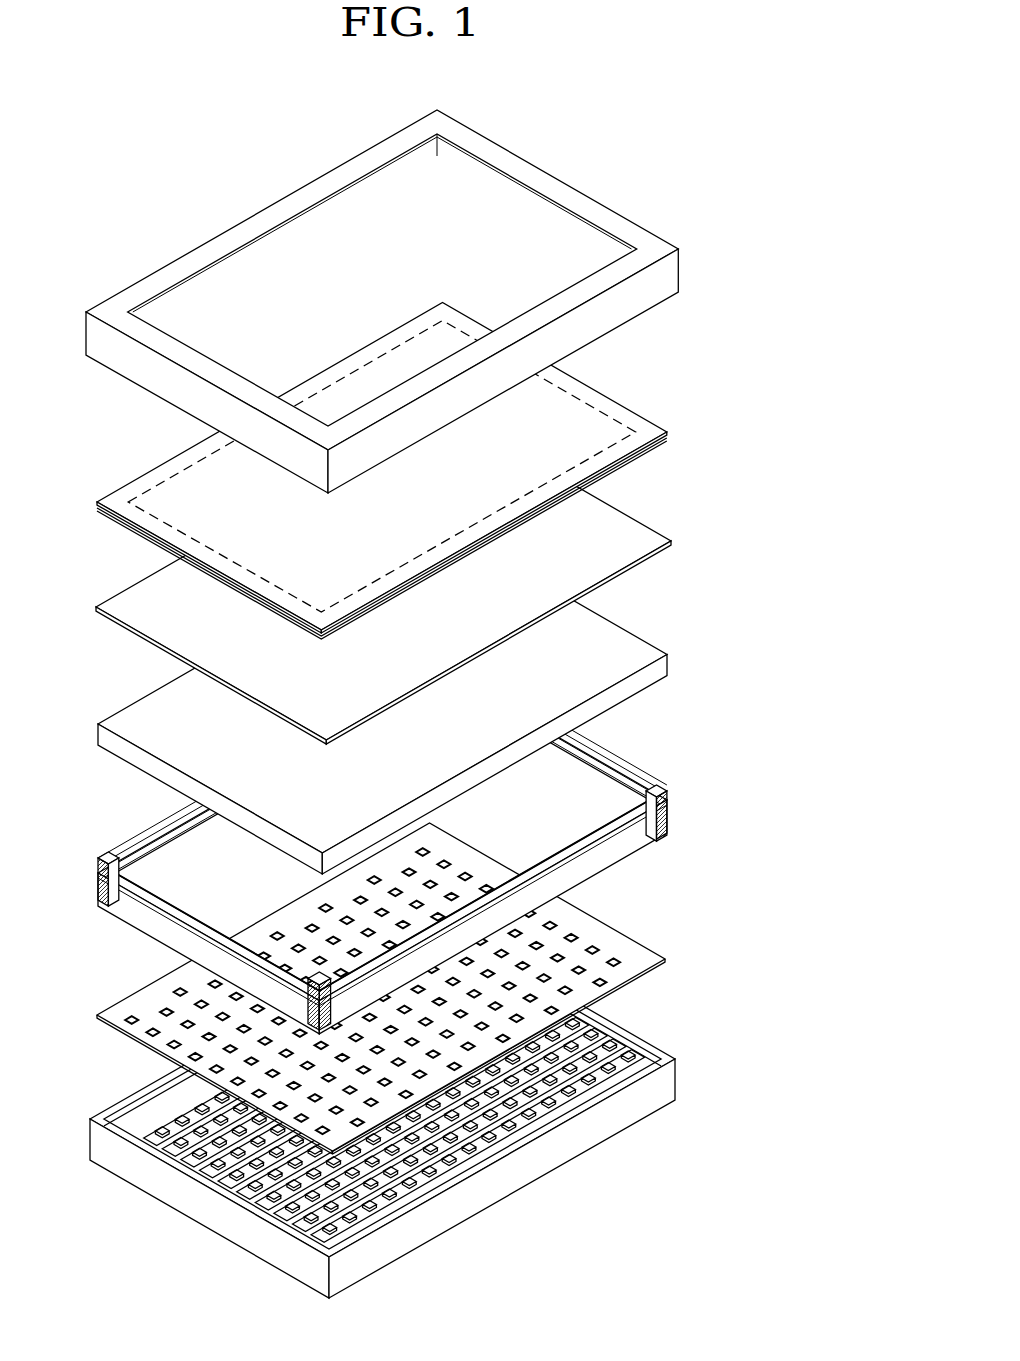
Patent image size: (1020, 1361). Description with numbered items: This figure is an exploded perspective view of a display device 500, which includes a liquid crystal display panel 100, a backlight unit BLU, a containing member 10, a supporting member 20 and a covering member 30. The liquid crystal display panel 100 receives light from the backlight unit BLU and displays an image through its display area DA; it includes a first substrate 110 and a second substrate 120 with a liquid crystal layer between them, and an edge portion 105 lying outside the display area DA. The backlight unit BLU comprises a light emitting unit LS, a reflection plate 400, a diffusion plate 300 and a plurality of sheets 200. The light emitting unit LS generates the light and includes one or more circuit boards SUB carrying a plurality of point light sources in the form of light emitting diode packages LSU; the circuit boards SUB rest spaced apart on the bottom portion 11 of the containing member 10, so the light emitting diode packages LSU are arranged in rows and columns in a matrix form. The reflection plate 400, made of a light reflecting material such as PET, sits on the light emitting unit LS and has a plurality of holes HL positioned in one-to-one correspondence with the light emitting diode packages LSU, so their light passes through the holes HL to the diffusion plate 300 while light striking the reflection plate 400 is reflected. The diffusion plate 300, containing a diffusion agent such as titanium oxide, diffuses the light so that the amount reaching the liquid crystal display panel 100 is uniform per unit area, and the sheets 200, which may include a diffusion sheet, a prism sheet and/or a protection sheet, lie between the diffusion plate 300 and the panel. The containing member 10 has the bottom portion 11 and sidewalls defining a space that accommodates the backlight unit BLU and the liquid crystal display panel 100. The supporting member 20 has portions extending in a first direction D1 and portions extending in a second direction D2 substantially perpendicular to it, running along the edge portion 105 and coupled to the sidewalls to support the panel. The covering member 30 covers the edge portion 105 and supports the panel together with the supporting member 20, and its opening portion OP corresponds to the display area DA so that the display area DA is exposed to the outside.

The display device 500 is at (428, 691).
The covering member 30 is at (382, 301).
The opening portion OP is at (365, 220).
The liquid crystal display panel 100 is at (446, 471).
The edge portion 105 is at (650, 412).
The second substrate 120 is at (665, 437).
The first substrate 110 is at (670, 462).
The display area DA is at (610, 386).
The sheets 200 is at (418, 576).
The diffusion plate 300 is at (650, 672).
The supporting member 20 is at (657, 850).
The reflection plate 400 is at (409, 988).
The holes HL is at (128, 1017).
The containing member 10 is at (394, 1109).
The bottom portion 11 is at (150, 1136).
The light emitting unit LS is at (353, 1117).
The light emitting diode packages LSU is at (207, 1183).
The circuit board SUB is at (265, 1212).
The backlight unit BLU is at (427, 853).
The first direction D1 is at (519, 1253).
The second direction D2 is at (519, 1253).